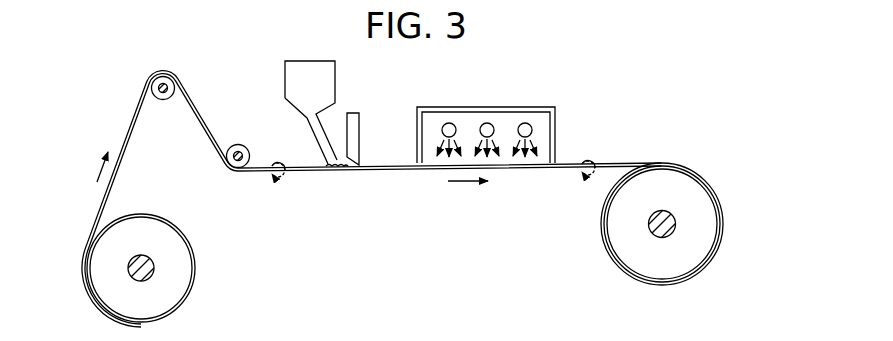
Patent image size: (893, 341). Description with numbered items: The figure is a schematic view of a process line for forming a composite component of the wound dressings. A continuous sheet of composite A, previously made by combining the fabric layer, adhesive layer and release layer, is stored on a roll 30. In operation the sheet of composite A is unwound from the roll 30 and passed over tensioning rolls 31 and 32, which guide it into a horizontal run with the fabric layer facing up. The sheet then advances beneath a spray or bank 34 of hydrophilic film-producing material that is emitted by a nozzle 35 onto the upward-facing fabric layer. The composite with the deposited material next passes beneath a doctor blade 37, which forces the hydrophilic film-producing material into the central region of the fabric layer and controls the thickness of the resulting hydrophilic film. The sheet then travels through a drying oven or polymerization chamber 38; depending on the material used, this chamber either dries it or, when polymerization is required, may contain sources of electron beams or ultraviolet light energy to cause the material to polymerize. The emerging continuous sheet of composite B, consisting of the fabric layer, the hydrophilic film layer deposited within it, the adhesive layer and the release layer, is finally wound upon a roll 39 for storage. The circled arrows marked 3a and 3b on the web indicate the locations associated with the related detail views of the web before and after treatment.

The roll 30 is at (167, 283).
The tensioning roll 31 is at (163, 72).
The tensioning roll 32 is at (238, 146).
The spray or bank of hydrophilic film-producing material 34 is at (340, 169).
The nozzle 35 is at (323, 132).
The doctor blade 37 is at (357, 143).
The drying oven or polymerization chamber 38 is at (488, 107).
The roll 39 is at (693, 228).
The section line 3a (rotation arrow) 3a is at (293, 159).
The section line 3b (rotation arrow) 3b is at (592, 154).
The composite A is at (121, 183).
The composite B is at (606, 174).